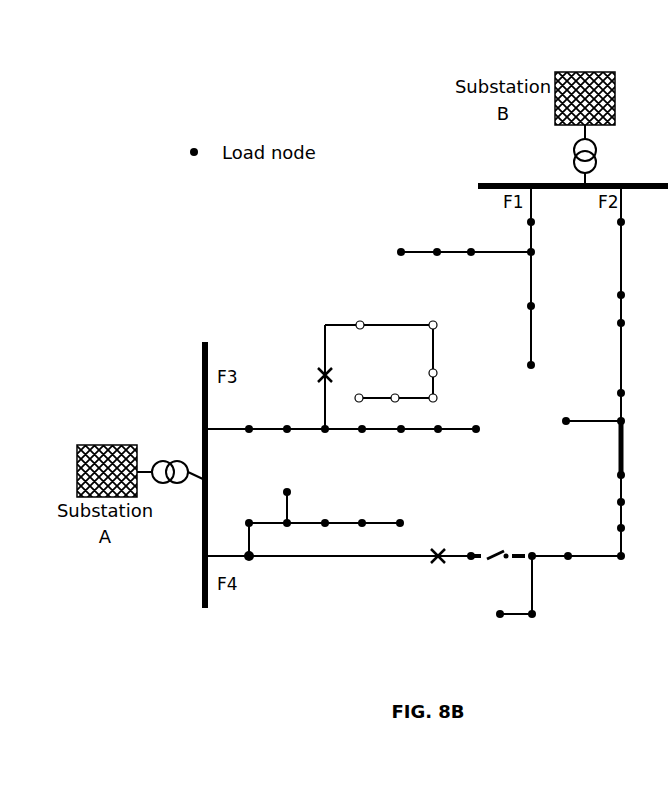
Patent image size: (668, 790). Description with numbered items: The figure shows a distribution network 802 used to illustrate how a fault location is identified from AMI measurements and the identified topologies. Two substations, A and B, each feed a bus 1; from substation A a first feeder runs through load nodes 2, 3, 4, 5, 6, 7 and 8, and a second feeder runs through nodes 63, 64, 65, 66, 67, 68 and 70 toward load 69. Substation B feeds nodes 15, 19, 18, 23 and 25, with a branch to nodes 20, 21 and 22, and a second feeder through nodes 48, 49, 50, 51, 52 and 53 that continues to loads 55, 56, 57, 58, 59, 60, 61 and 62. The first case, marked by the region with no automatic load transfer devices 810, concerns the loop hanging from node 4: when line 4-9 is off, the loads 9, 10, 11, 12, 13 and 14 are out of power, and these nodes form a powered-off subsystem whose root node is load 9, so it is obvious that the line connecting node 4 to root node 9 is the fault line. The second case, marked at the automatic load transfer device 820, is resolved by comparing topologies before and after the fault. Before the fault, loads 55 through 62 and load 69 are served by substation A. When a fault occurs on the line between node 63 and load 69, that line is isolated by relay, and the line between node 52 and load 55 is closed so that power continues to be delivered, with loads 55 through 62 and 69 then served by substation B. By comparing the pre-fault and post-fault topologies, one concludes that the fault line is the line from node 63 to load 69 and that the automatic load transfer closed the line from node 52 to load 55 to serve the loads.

The substation bus 1 is at (429, 386).
The load node 2 is at (251, 441).
The load node 3 is at (289, 441).
The load node 4 is at (327, 441).
The load node 5 is at (362, 441).
The load node 6 is at (401, 441).
The load node 7 is at (440, 441).
The load node 8 is at (476, 441).
The load 9 is at (360, 336).
The load 10 is at (446, 335).
The load 11 is at (446, 380).
The load 12 is at (446, 409).
The load 13 is at (396, 409).
The load 14 is at (360, 409).
The load node 15 is at (546, 222).
The line segment 18 is at (546, 279).
The junction node 19 is at (518, 265).
The load node 20 is at (475, 265).
The load node 21 is at (437, 265).
The load node 22 is at (401, 265).
The load node 23 is at (545, 306).
The load node 25 is at (545, 365).
The load node 48 is at (636, 222).
The load node 49 is at (636, 295).
The load node 50 is at (636, 323).
The load node 51 is at (636, 386).
The node 52 is at (636, 443).
The load node 53 is at (554, 421).
The load 55 is at (636, 475).
The load 56 is at (636, 502).
The load 57 is at (636, 528).
The load 58 is at (636, 556).
The load 59 is at (568, 566).
The load 60 is at (523, 565).
The load 61 is at (539, 624).
The load 62 is at (500, 624).
The node 63 is at (252, 564).
The load node 64 is at (258, 532).
The load node 65 is at (289, 532).
The load node 66 is at (325, 532).
The load node 67 is at (362, 532).
The load node 68 is at (400, 532).
The load 69 is at (470, 565).
The load node 70 is at (298, 492).
The distribution network 802 is at (322, 94).
The automatic load transfer devices 810 is at (368, 304).
The automatic load transfer device 820 is at (450, 605).